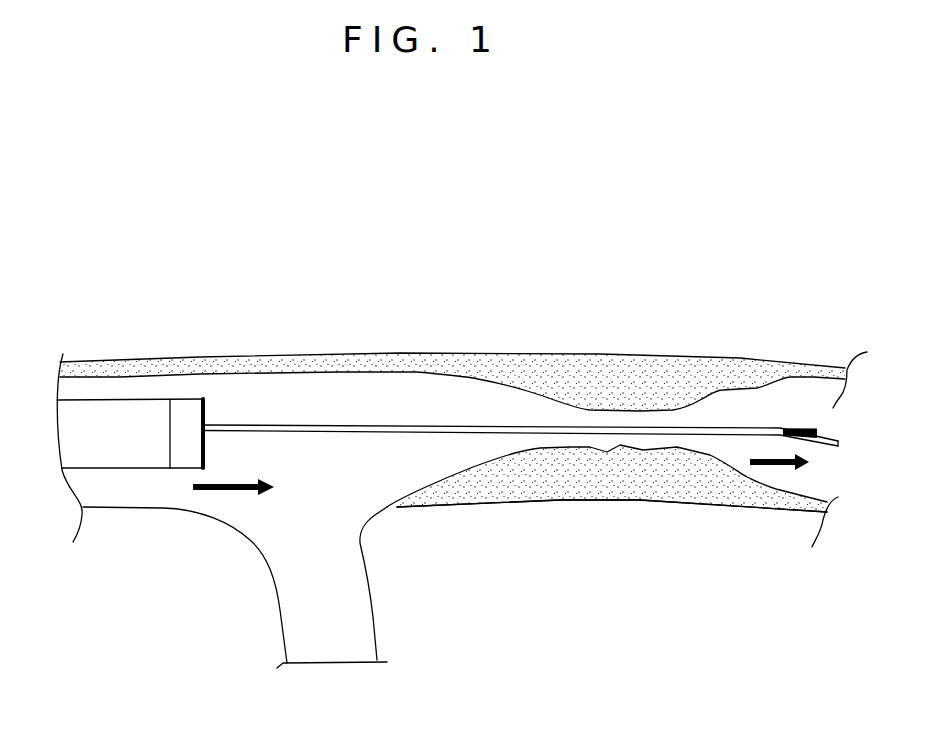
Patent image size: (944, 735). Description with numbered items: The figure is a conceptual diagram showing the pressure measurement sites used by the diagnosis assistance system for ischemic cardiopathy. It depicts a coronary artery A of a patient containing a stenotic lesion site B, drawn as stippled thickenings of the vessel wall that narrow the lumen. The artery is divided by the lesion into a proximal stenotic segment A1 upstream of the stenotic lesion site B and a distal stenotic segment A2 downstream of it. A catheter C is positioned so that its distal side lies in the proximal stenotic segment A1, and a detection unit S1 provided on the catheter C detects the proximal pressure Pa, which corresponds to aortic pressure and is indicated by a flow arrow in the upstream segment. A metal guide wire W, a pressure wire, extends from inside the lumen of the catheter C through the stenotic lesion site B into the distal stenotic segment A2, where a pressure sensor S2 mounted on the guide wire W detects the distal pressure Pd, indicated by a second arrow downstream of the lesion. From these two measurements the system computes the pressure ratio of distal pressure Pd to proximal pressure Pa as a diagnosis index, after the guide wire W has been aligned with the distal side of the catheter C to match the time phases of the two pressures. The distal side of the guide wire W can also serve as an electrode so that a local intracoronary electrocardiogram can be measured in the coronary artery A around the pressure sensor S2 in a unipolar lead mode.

The coronary artery A is at (478, 290).
The proximal stenotic segment A1 is at (250, 412).
The distal stenotic segment A2 is at (798, 475).
The stenotic lesion site B is at (650, 383).
The catheter C is at (117, 430).
The detection unit S1 is at (205, 400).
The pressure sensor S2 is at (798, 427).
The guide wire W is at (517, 425).
The proximal pressure Pa is at (249, 490).
The distal pressure Pd is at (794, 464).